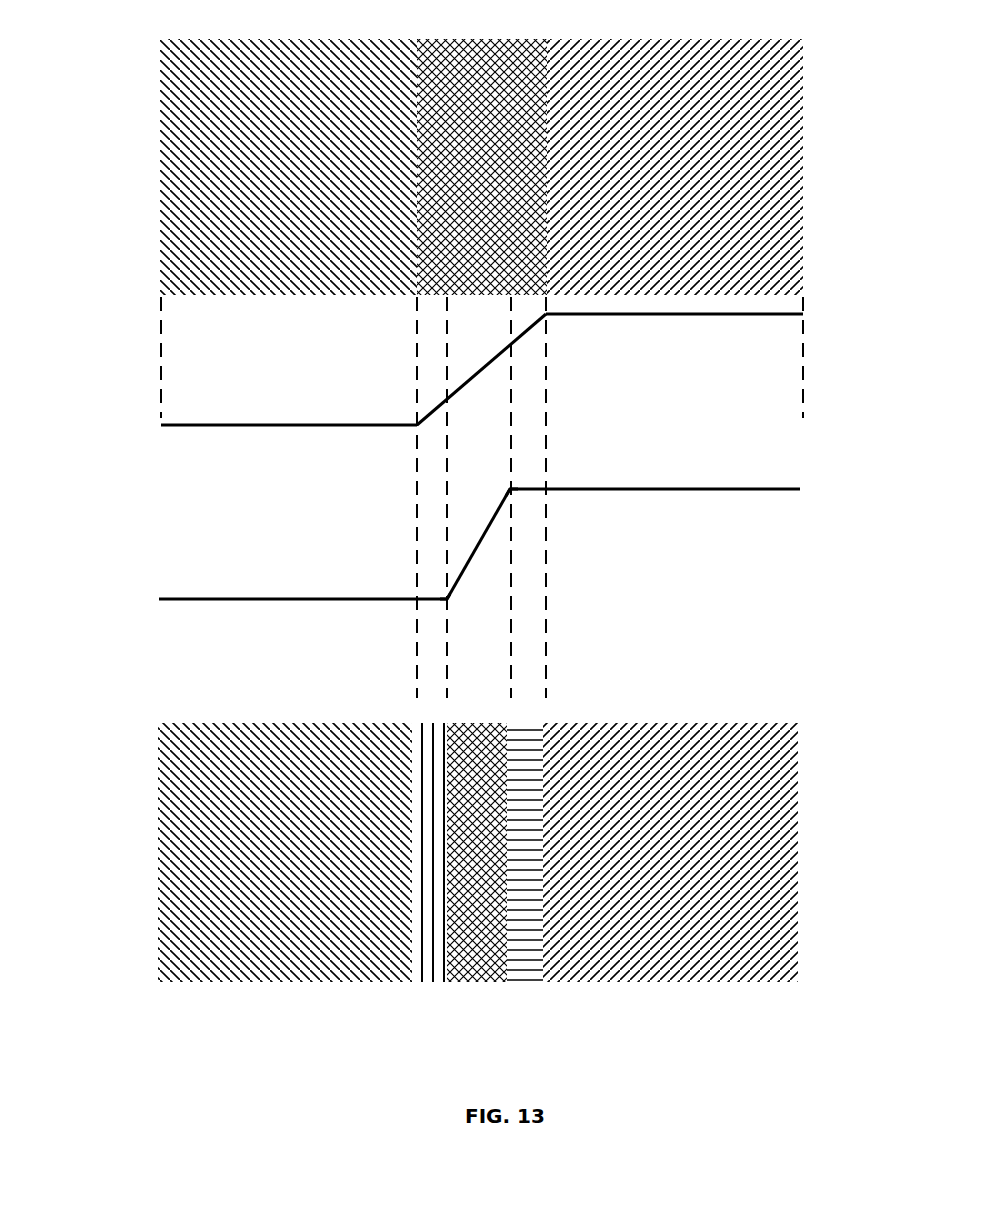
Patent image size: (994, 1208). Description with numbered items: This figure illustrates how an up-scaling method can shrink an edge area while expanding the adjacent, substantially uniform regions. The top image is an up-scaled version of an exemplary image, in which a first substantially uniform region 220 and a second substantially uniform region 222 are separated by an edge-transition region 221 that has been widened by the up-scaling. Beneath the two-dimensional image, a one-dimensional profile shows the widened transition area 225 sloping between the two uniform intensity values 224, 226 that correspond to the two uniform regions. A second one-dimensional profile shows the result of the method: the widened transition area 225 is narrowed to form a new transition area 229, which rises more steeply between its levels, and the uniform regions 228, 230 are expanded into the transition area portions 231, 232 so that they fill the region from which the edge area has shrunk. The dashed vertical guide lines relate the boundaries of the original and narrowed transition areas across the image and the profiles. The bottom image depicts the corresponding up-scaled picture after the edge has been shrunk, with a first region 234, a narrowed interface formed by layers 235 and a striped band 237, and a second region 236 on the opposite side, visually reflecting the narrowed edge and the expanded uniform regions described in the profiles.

The first substantially uniform region 220 is at (145, 213).
The edge-transition region 221 is at (451, 28).
The second substantially uniform region 222 is at (817, 227).
The uniform intensity value 224 is at (270, 410).
The widened transition area 225 is at (483, 388).
The uniform intensity value 226 is at (594, 329).
The uniform region 228 is at (269, 584).
The new transition area 229 is at (484, 568).
The uniform region 230 is at (593, 504).
The transition area portion 231 is at (424, 585).
The transition area portion 232 is at (520, 475).
The first layer 234 is at (143, 853).
The interface layers 235 is at (414, 995).
The second layer 236 is at (813, 858).
The layered transition region 237 is at (527, 996).